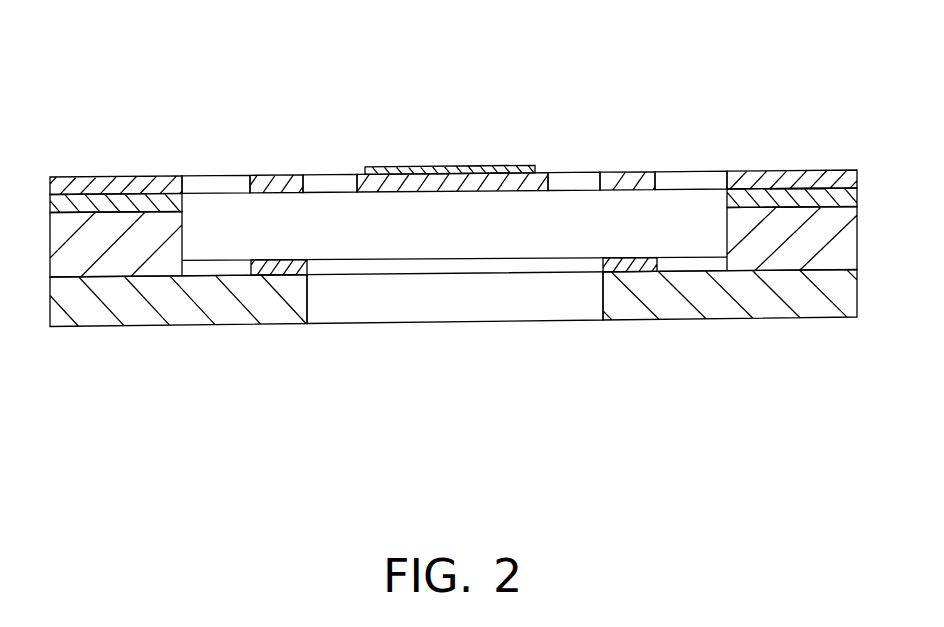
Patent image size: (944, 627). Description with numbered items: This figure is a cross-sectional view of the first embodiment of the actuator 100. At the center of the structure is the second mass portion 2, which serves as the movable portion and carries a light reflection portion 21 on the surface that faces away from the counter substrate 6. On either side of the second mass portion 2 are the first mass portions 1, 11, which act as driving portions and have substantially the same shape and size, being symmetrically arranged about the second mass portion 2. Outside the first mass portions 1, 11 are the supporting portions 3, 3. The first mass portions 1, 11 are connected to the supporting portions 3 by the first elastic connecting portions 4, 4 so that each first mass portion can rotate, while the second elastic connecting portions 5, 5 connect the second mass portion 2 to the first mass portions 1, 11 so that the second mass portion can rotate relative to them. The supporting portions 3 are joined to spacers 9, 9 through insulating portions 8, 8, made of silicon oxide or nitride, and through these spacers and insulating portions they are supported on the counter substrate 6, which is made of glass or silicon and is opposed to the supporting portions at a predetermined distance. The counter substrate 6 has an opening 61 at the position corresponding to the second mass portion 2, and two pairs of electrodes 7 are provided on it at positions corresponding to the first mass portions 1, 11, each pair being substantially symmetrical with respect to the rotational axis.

The actuator 100 is at (760, 100).
The first mass portion 1 is at (638, 183).
The second mass portion 2 is at (385, 185).
The light reflection portion 21 is at (466, 170).
The supporting portion 3 is at (134, 204).
The first elastic connecting portion 4 is at (212, 187).
The second elastic connecting portion 5 is at (332, 186).
The counter substrate 6 is at (141, 312).
The opening 61 is at (462, 304).
The electrode 7 is at (304, 272).
The insulating portion 8 is at (73, 190).
The spacer 9 is at (73, 255).
The first mass portion 11 is at (277, 191).